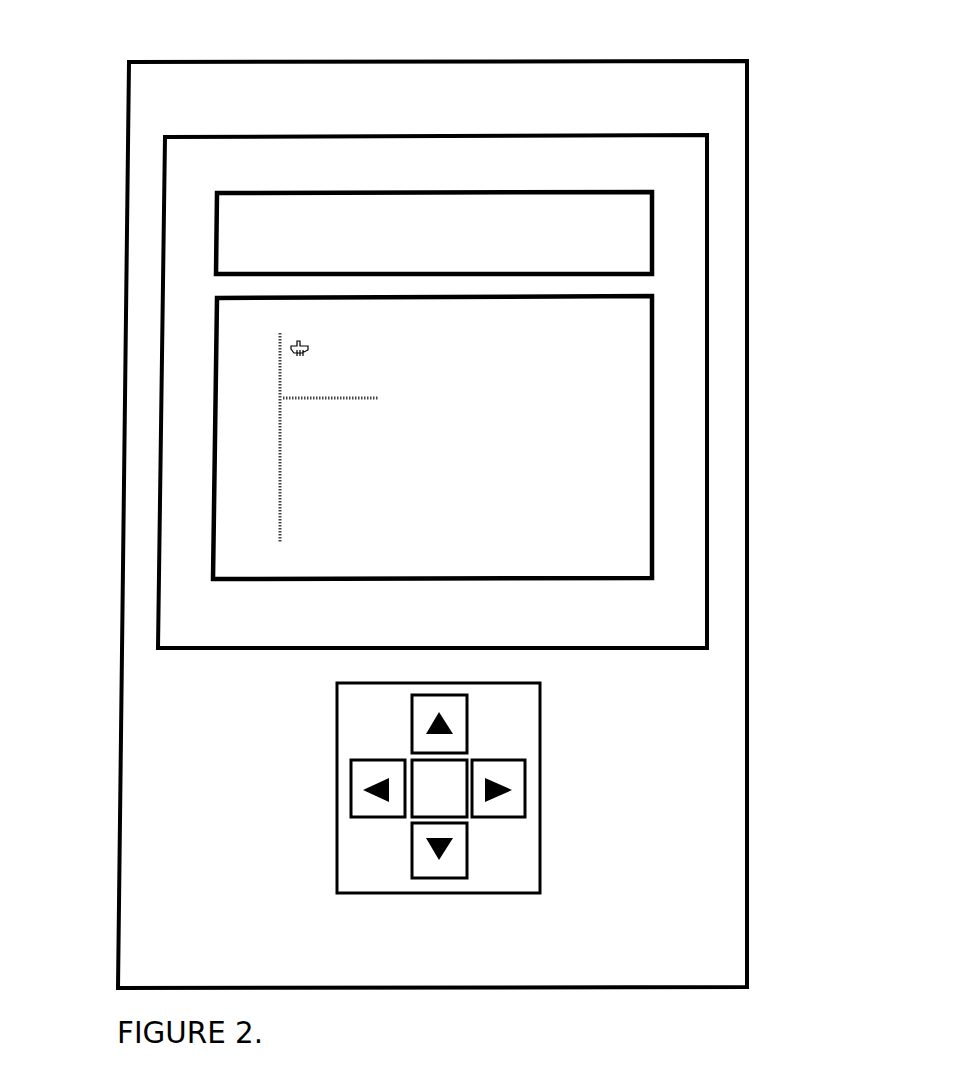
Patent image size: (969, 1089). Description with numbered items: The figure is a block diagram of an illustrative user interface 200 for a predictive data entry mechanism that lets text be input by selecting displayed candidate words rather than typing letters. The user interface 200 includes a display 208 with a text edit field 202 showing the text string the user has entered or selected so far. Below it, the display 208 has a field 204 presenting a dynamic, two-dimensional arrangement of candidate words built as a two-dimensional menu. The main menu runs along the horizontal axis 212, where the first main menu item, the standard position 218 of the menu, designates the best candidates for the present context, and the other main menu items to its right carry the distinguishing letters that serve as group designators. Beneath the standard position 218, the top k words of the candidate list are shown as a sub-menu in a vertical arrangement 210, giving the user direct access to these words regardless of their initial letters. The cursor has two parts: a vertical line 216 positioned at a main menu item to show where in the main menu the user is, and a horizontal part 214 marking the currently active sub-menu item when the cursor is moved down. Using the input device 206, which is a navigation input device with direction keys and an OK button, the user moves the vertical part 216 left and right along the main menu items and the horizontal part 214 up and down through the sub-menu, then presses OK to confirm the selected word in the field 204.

The user interface 200 is at (747, 832).
The text edit field 202 is at (652, 267).
The field 204 is at (652, 423).
The input device 206 is at (540, 795).
The display 208 is at (707, 150).
The vertical arrangement of words 210 is at (290, 503).
The horizontal axis 212 is at (597, 352).
The horizontal part of the cursor 214 is at (293, 404).
The vertical part of the cursor 216 is at (282, 382).
The standard position of the menu 218 is at (302, 335).